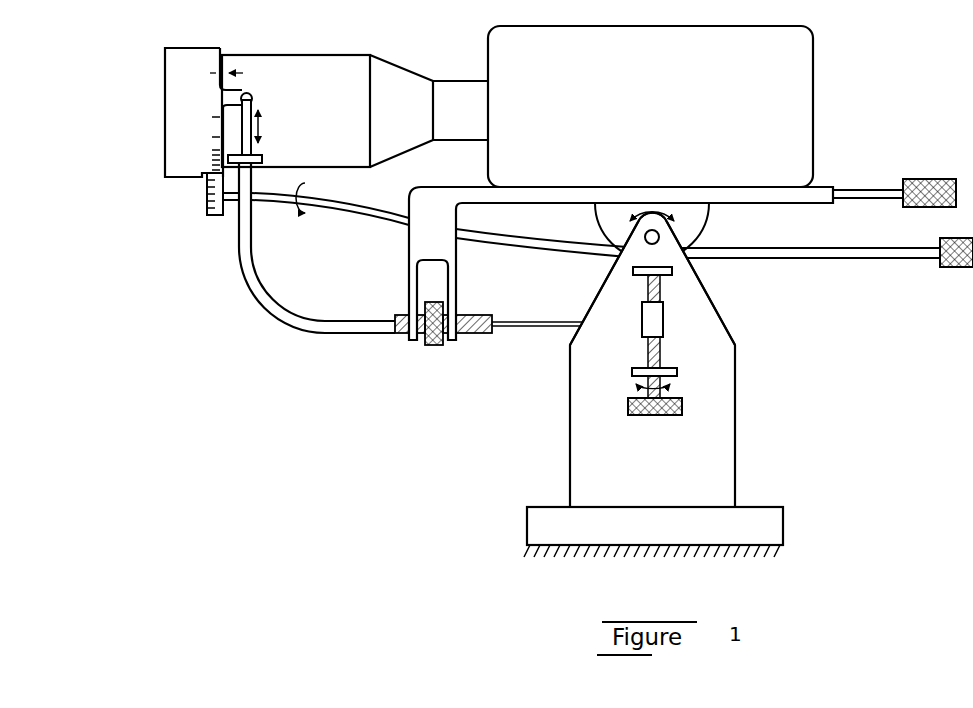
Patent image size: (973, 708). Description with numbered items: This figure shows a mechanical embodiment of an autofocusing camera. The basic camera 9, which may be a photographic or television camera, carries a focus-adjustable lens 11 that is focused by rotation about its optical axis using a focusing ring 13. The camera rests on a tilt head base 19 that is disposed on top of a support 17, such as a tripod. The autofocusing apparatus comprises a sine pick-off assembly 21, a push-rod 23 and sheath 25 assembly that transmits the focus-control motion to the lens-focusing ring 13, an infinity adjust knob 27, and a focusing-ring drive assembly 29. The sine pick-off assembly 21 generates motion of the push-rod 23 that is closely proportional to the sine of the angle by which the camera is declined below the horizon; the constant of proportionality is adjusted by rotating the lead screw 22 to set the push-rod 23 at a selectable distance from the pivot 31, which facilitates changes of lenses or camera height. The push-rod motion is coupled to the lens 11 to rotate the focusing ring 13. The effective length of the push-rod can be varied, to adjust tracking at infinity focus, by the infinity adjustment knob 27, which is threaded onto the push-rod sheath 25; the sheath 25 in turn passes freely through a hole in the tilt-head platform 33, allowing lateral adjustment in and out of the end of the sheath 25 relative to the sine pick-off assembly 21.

The camera 9 is at (813, 30).
The focus-adjustable lens 11 is at (397, 75).
The focusing ring 13 is at (168, 137).
The support 17 is at (772, 522).
The tilt head base 19 is at (572, 460).
The sine pick-off assembly 21 is at (613, 363).
The lead screw 22 is at (662, 288).
The push-rod 23 is at (517, 330).
The sheath 25 is at (273, 293).
The infinity adjust knob 27 is at (492, 373).
The focusing-ring drive assembly 29 is at (313, 150).
The pivot 31 is at (710, 227).
The tilt-head platform 33 is at (458, 307).